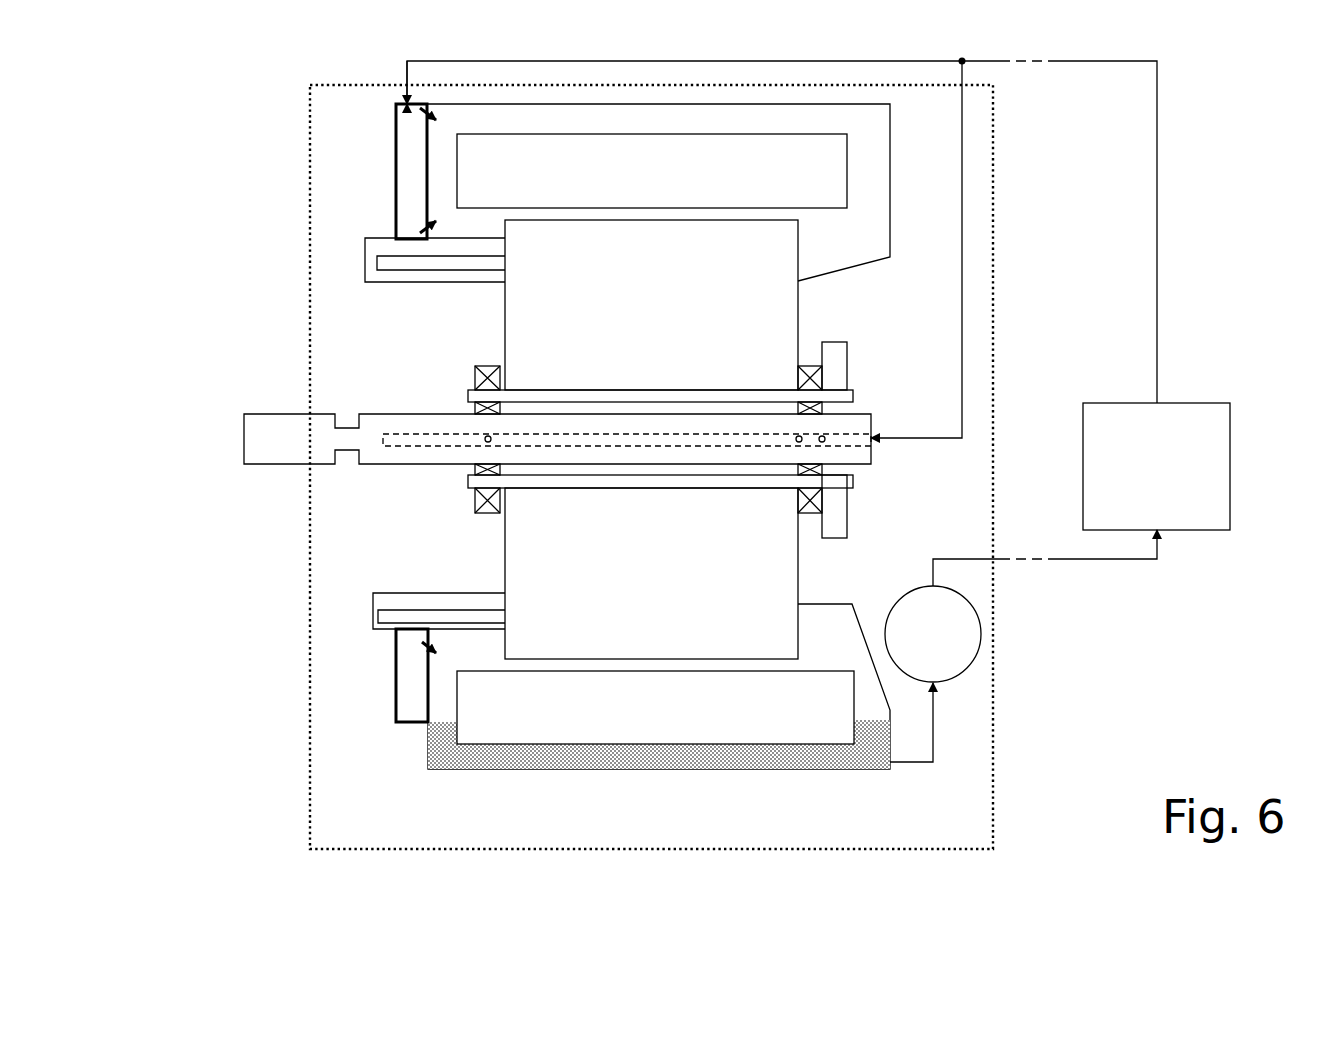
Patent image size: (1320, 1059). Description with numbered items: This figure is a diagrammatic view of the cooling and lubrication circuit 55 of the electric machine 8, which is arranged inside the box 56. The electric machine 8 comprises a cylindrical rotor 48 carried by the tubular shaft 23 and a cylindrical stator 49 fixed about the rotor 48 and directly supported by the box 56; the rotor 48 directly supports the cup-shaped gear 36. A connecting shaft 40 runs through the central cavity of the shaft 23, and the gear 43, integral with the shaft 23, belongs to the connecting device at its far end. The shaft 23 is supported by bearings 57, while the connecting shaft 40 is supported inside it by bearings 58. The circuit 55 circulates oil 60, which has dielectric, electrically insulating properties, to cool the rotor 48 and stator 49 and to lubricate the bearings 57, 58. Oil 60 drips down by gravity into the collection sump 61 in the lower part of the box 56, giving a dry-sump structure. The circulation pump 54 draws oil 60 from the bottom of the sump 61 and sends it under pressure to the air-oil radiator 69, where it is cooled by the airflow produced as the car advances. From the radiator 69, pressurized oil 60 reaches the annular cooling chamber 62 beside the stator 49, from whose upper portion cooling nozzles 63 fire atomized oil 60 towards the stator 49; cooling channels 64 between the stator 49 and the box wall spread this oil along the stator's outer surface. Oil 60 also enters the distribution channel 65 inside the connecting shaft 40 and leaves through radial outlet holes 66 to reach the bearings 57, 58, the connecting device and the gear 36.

The electric machine 8 is at (558, 467).
The shaft 23 is at (478, 396).
The gear 36 is at (430, 268).
The connecting shaft 40 is at (265, 423).
The gear 43 is at (840, 530).
The rotor 48 is at (651, 439).
The stator 49 is at (655, 439).
The circulation pump 54 is at (933, 674).
The cooling and lubrication circuit 55 is at (825, 374).
The box 56 is at (310, 797).
The bearings 57 is at (487, 366).
The bearings 58 is at (478, 470).
The oil 60 is at (449, 754).
The collection sump 61 is at (832, 625).
The annular cooling chamber 62 is at (410, 166).
The cooling nozzles 63 is at (440, 120).
The cooling channels 64 is at (702, 116).
The distribution channel 65 is at (398, 438).
The outlet holes 66 is at (822, 439).
The radiator 69 is at (1156, 466).